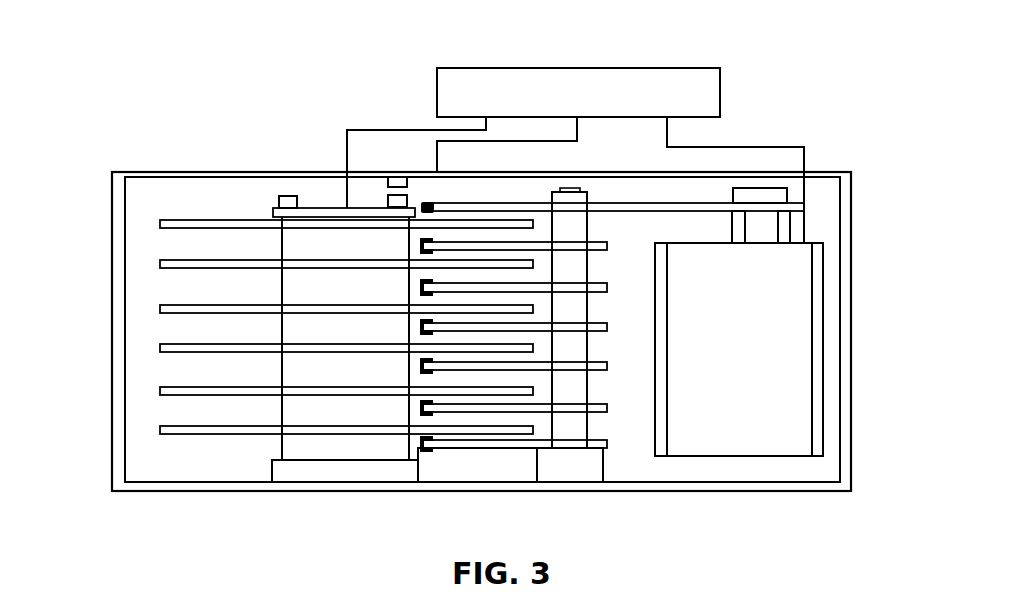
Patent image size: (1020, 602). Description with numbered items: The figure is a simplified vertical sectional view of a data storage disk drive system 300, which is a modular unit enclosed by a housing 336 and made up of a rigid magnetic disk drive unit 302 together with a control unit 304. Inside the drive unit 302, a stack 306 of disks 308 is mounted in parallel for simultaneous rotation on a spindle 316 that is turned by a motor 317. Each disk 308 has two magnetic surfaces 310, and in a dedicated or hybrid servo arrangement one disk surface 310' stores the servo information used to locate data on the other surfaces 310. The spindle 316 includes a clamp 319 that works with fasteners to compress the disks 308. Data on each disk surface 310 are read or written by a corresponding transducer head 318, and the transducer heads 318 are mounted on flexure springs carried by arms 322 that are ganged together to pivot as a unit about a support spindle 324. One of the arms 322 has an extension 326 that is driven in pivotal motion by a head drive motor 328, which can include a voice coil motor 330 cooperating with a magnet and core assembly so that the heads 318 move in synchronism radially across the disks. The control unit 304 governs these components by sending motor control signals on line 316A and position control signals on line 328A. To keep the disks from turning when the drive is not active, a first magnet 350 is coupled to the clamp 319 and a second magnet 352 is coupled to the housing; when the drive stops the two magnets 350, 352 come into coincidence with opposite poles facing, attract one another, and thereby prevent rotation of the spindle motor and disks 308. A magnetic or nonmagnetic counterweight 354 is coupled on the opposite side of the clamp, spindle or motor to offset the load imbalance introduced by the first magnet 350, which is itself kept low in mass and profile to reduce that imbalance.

The data storage disk drive system 300 is at (874, 68).
The rigid magnetic disk drive unit 302 is at (313, 127).
The control unit 304 is at (720, 72).
The stack 306 is at (232, 186).
The disks 308 is at (160, 351).
The magnetic surfaces 310 is at (290, 246).
The disk surface 310' is at (303, 174).
The spindle 316 is at (280, 442).
The line 316A is at (412, 130).
The motor 317 is at (268, 470).
The transducer head 318 is at (420, 251).
The clamp 319 is at (327, 207).
The arms 322 is at (597, 249).
The support spindle 324 is at (588, 422).
The extension 326 is at (622, 203).
The head drive motor 328 is at (790, 318).
The line 328A is at (732, 147).
The voice coil motor 330 is at (790, 223).
The housing 336 is at (851, 395).
The first magnet 350 is at (407, 200).
The second magnet 352 is at (390, 180).
The counterweight 354 is at (283, 196).